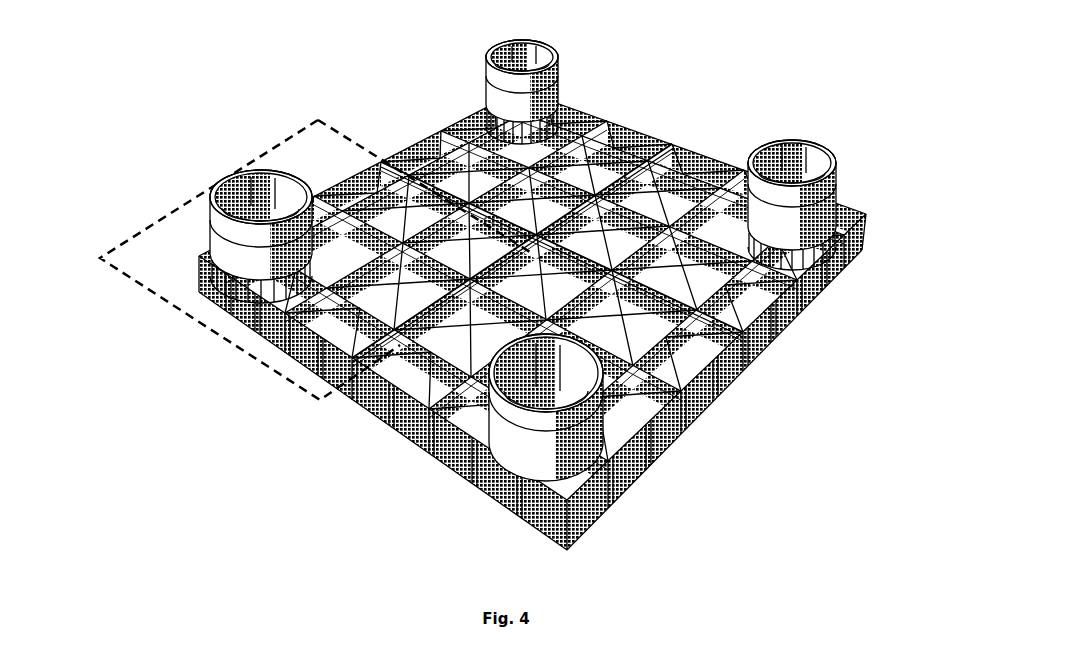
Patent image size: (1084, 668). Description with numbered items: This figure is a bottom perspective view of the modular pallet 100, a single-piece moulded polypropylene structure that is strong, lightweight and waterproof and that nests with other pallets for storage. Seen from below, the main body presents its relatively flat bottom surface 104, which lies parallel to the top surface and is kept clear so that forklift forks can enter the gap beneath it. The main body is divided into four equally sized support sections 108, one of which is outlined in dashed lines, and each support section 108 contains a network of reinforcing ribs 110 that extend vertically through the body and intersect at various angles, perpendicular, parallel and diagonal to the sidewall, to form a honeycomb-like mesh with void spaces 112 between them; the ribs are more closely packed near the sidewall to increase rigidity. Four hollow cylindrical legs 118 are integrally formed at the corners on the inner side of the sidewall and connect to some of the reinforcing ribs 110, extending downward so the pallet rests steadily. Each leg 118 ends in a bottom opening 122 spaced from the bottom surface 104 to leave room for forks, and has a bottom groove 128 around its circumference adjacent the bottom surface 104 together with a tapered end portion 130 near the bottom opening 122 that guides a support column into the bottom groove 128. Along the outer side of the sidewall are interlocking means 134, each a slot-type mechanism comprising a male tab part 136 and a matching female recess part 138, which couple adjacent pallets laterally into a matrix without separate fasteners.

The modular pallet 100 is at (308, 58).
The bottom surface 104 is at (398, 118).
The support section 108 is at (289, 136).
The reinforcing ribs 110 is at (437, 331).
The void spaces 112 is at (487, 158).
The legs 118 is at (248, 271).
The bottom opening 122 is at (247, 188).
The bottom groove 128 is at (319, 243).
The tapered end portion 130 is at (285, 231).
The interlocking means 134 is at (532, 382).
The male tab part 136 is at (720, 382).
The female recess part 138 is at (743, 371).